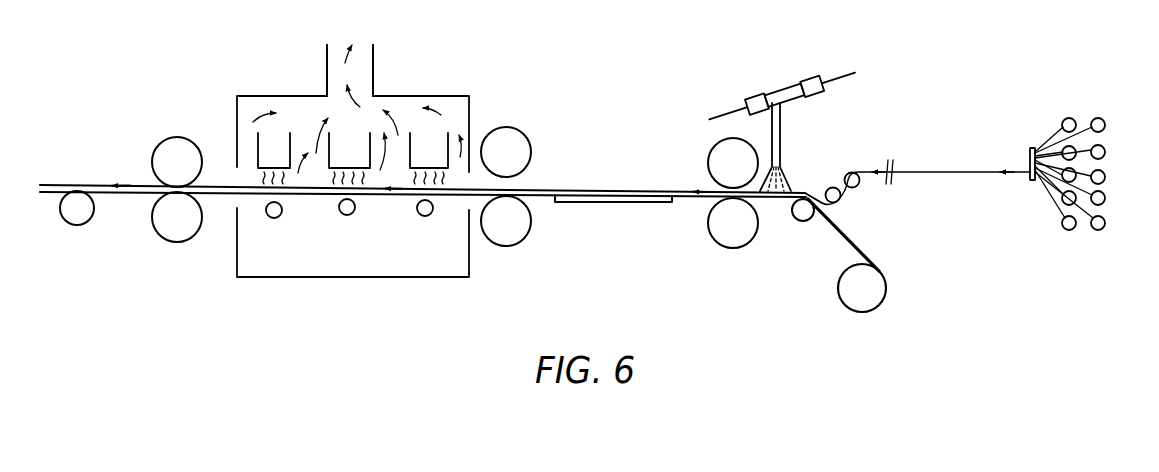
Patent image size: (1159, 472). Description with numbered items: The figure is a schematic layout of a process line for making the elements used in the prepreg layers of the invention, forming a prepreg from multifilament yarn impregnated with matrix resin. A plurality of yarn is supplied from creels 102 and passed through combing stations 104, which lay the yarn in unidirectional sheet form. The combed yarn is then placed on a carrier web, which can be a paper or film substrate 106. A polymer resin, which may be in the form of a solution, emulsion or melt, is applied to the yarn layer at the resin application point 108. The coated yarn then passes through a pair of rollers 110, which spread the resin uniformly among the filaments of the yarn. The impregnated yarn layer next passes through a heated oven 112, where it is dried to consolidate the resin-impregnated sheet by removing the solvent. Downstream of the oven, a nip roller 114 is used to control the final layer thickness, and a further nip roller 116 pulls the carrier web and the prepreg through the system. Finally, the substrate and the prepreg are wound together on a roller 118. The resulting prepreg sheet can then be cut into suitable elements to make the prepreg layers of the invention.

The creels 102 is at (1121, 127).
The combing stations 104 is at (1031, 127).
The paper or film substrate 106 is at (830, 231).
The resin application point 108 is at (778, 84).
The pair of rollers 110 is at (710, 148).
The heated oven 112 is at (380, 65).
The nip roller 114 is at (503, 246).
The nip roller 116 is at (177, 242).
The roller 118 is at (77, 225).